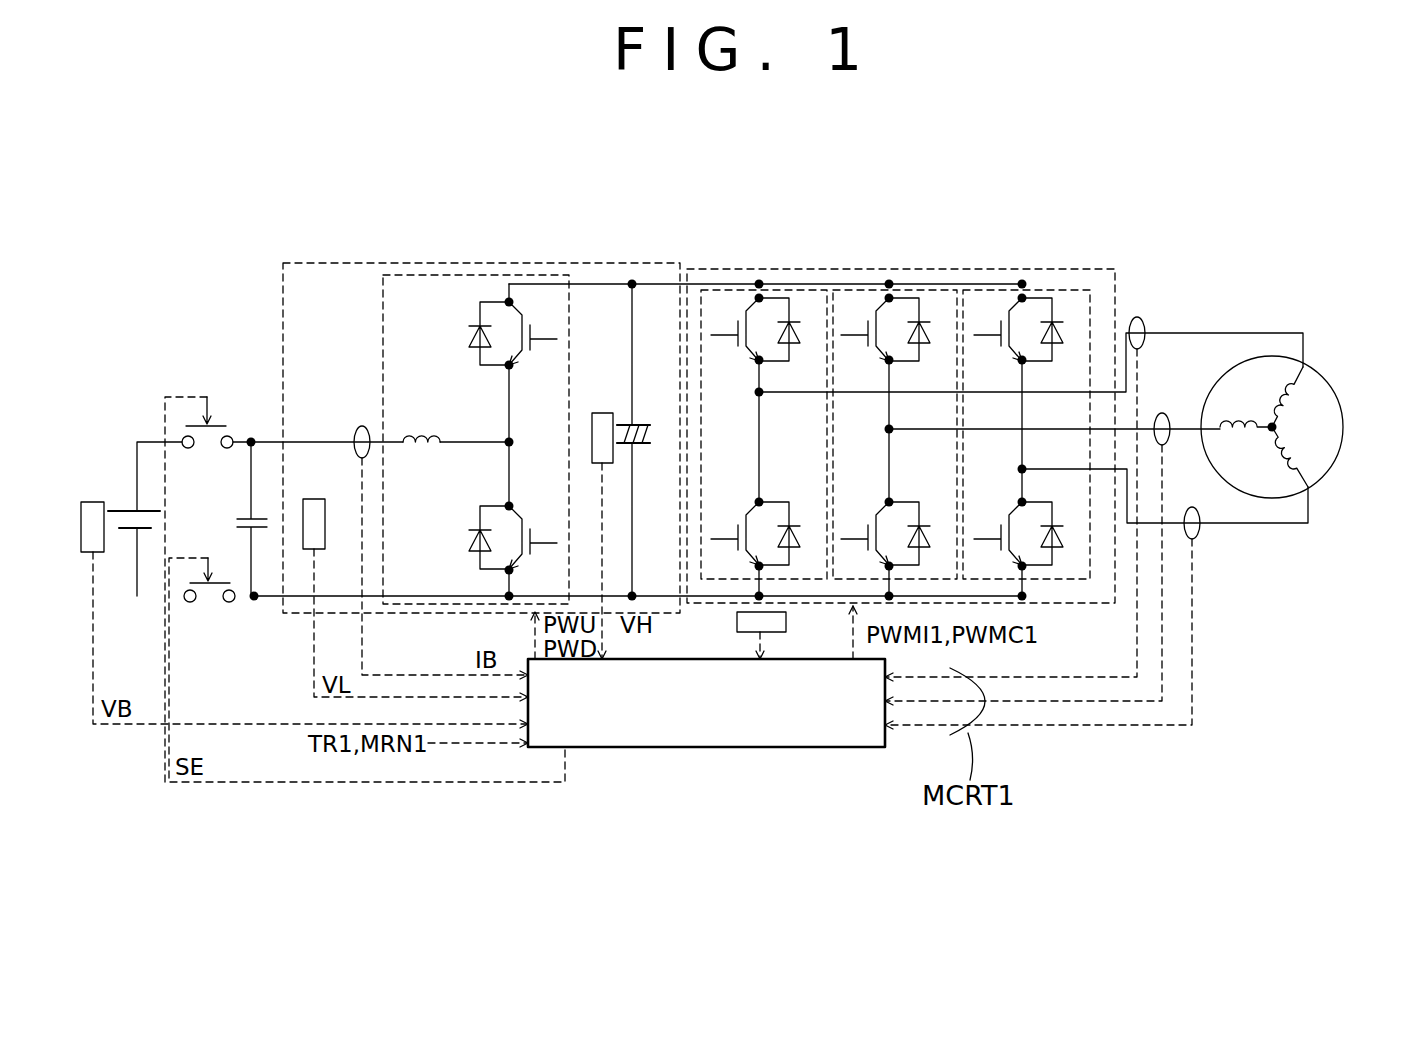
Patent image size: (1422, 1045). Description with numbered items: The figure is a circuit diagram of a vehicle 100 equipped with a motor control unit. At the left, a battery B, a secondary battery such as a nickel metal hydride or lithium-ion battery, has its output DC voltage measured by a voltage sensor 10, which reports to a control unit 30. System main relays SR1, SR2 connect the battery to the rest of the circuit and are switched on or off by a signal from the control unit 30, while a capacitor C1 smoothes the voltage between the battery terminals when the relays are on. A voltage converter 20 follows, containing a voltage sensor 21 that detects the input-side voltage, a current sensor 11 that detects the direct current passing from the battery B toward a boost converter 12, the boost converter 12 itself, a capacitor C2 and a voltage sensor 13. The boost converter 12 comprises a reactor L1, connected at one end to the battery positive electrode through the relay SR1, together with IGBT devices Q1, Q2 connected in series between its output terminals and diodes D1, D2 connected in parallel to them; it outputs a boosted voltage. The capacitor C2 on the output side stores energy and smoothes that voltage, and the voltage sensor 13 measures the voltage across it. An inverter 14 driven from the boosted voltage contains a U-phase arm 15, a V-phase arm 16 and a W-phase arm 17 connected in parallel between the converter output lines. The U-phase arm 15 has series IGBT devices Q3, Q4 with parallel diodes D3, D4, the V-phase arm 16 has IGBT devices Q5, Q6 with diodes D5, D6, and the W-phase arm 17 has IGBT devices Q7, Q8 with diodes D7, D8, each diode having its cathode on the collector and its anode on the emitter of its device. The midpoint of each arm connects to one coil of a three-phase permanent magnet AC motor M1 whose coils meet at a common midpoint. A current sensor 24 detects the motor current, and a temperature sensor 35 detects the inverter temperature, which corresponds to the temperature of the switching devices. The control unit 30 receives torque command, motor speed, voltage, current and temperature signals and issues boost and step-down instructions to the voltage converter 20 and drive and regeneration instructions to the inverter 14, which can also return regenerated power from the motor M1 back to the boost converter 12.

The vehicle 100 is at (1170, 210).
The battery B is at (126, 506).
The voltage sensor 10 is at (92, 502).
The system main relay SR1 is at (228, 402).
The system main relay SR2 is at (212, 606).
The capacitor C1 is at (246, 519).
The voltage converter 20 is at (283, 300).
The voltage sensor 21 is at (314, 499).
The current sensor 11 is at (360, 427).
The boost converter 12 is at (383, 303).
The reactor L1 is at (421, 419).
The IGBT device Q1 is at (538, 333).
The IGBT device Q2 is at (539, 537).
The diode D1 is at (473, 333).
The diode D2 is at (473, 537).
The voltage sensor 13 is at (602, 413).
The capacitor C2 is at (645, 425).
The inverter 14 is at (722, 268).
The U-phase arm 15 is at (800, 290).
The V-phase arm 16 is at (930, 290).
The W-phase arm 17 is at (1063, 290).
The IGBT device Q3 is at (733, 329).
The IGBT device Q4 is at (733, 533).
The IGBT device Q5 is at (863, 329).
The IGBT device Q6 is at (863, 533).
The IGBT device Q7 is at (995, 329).
The IGBT device Q8 is at (996, 533).
The diode D3 is at (792, 335).
The diode D4 is at (793, 540).
The diode D5 is at (922, 335).
The diode D6 is at (923, 540).
The diode D7 is at (1054, 335).
The diode D8 is at (1056, 540).
The current sensor 24 is at (1137, 317).
The control unit 30 is at (618, 749).
The temperature sensor 35 is at (786, 622).
The AC motor M1 is at (1341, 405).